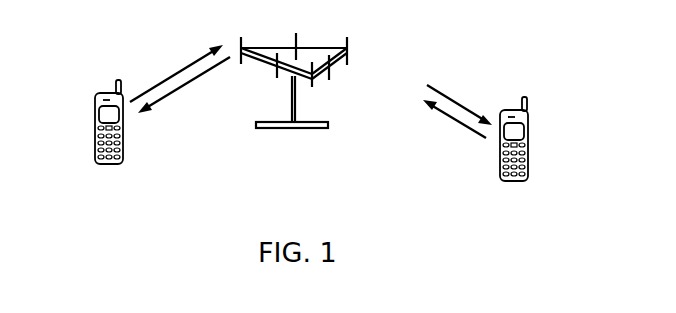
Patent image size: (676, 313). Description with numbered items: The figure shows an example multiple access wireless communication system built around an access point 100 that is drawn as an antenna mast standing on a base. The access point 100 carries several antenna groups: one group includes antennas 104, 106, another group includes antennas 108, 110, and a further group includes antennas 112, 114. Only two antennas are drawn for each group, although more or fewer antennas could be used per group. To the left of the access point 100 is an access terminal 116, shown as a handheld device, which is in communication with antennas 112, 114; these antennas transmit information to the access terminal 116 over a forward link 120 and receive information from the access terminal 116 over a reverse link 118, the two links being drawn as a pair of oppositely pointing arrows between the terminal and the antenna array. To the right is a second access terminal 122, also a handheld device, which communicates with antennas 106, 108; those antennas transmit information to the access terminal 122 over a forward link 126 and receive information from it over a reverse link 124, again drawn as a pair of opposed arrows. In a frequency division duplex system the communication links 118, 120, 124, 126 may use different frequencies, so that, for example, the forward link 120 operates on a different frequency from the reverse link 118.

The access point 100 is at (298, 128).
The antenna 104 is at (313, 87).
The antenna 106 is at (331, 73).
The antenna 108 is at (349, 58).
The antenna 110 is at (297, 35).
The antenna 112 is at (241, 40).
The antenna 114 is at (276, 76).
The access terminal 116 is at (95, 109).
The reverse link 118 is at (183, 68).
The forward link 120 is at (173, 90).
The access terminal 122 is at (528, 131).
The reverse link 124 is at (462, 125).
The forward link 126 is at (458, 102).